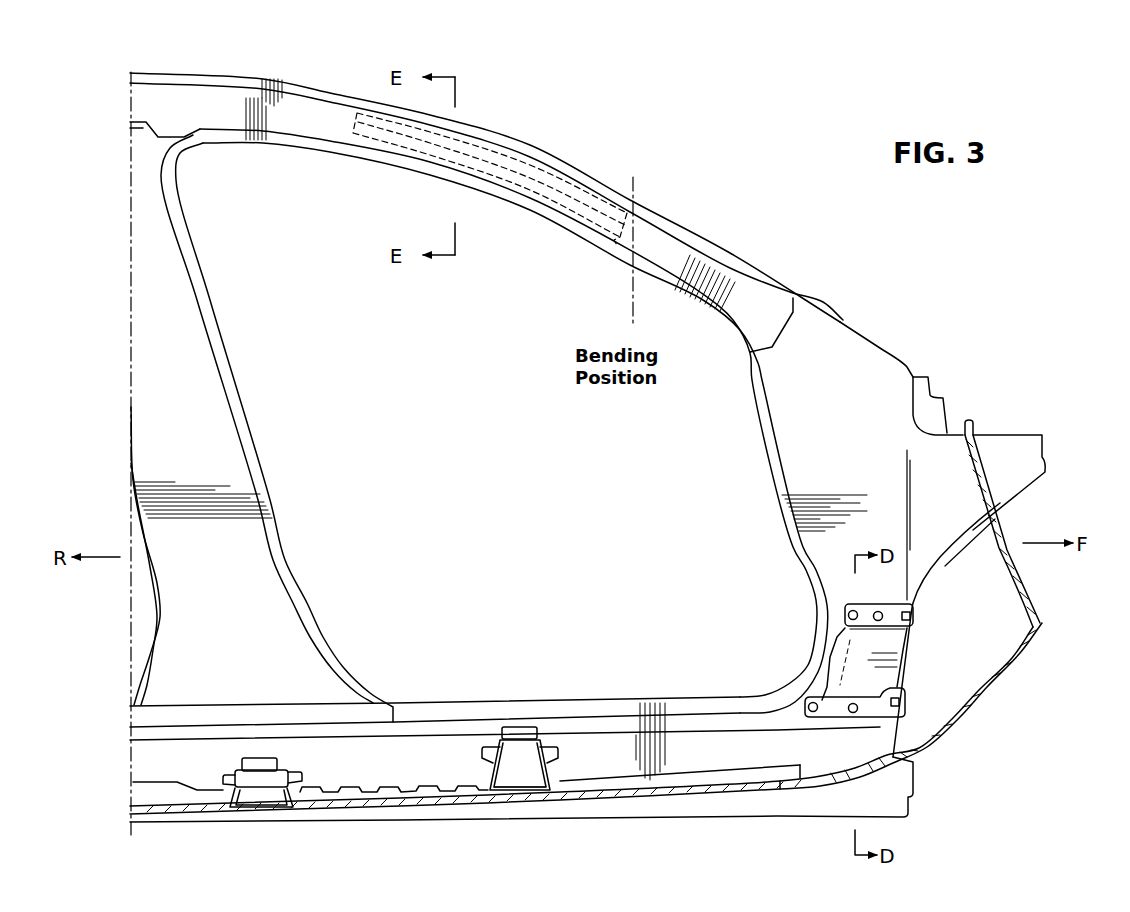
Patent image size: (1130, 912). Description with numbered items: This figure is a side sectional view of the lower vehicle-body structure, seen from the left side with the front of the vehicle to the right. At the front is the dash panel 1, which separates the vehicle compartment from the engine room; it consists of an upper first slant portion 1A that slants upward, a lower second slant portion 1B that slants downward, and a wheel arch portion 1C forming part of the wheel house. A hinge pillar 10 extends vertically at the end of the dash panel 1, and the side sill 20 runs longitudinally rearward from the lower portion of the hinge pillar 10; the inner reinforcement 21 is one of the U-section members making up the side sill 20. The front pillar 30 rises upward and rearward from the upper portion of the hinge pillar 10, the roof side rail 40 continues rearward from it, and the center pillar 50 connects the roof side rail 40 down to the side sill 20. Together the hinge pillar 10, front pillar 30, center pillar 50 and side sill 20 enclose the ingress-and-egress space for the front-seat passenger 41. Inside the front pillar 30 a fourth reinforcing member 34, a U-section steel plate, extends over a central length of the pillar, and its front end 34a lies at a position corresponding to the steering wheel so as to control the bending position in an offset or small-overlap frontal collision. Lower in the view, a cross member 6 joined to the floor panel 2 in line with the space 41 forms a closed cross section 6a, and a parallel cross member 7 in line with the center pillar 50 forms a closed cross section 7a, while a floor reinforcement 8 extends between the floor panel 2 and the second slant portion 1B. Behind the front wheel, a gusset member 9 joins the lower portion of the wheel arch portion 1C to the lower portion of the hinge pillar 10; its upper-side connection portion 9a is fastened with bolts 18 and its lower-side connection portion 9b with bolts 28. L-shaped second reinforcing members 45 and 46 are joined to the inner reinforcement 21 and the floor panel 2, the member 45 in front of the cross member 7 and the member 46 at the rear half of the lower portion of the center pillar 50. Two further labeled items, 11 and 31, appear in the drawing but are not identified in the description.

The dash panel 1 is at (1040, 603).
The first slant portion 1A is at (993, 513).
The second slant portion 1B is at (970, 697).
The wheel arch portion 1C is at (958, 622).
The floor panel 2 is at (702, 780).
The cross member 6 is at (520, 735).
The closed cross section 6a is at (518, 780).
The cross member 7 is at (252, 787).
The closed cross section 7a is at (267, 800).
The floor reinforcement 8 is at (798, 778).
The gusset member 9 is at (828, 648).
The upper-side connection portion 9a is at (858, 605).
The lower-side connection portion 9b is at (840, 712).
The hinge pillar 10 is at (765, 443).
The door panel region 11 is at (827, 462).
The bolts 18 is at (845, 617).
The side sill 20 is at (570, 700).
The inner reinforcement 21 is at (430, 765).
The bolts 28 is at (808, 700).
The front pillar 30 is at (587, 173).
The roof side rail end portion 31 is at (663, 247).
The fourth reinforcing member 34 is at (527, 173).
The front end 34a is at (623, 253).
The roof side rail 40 is at (195, 72).
The ingress-and-egress space for front-seat passenger 41 is at (477, 449).
The second reinforcing member 45 is at (350, 787).
The second reinforcing member 46 is at (162, 782).
The center pillar 50 is at (243, 412).